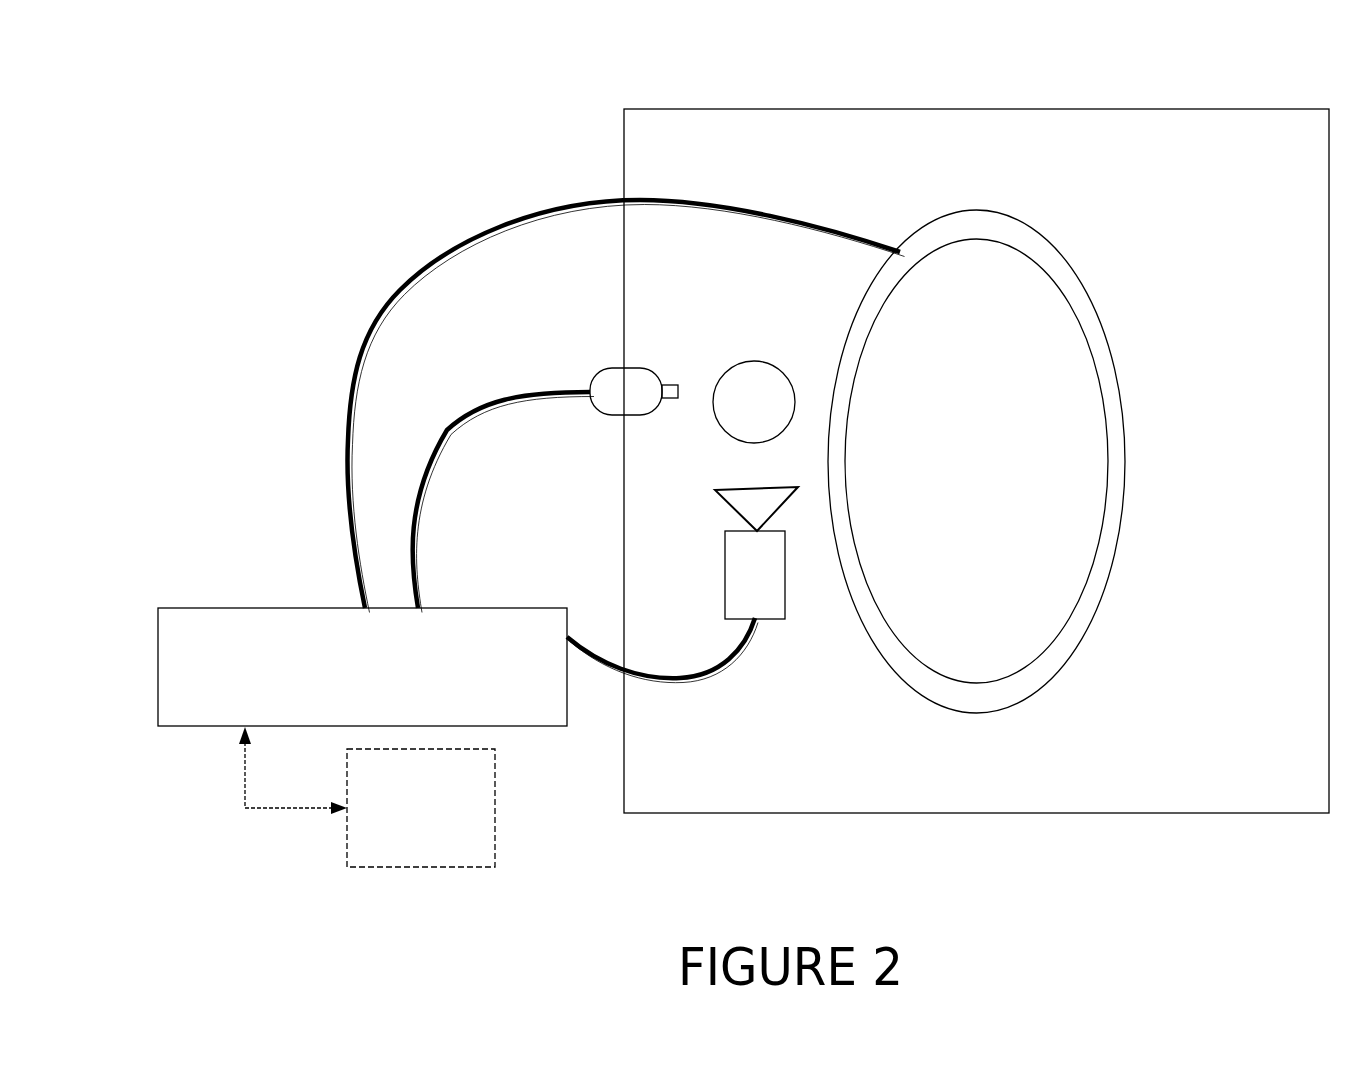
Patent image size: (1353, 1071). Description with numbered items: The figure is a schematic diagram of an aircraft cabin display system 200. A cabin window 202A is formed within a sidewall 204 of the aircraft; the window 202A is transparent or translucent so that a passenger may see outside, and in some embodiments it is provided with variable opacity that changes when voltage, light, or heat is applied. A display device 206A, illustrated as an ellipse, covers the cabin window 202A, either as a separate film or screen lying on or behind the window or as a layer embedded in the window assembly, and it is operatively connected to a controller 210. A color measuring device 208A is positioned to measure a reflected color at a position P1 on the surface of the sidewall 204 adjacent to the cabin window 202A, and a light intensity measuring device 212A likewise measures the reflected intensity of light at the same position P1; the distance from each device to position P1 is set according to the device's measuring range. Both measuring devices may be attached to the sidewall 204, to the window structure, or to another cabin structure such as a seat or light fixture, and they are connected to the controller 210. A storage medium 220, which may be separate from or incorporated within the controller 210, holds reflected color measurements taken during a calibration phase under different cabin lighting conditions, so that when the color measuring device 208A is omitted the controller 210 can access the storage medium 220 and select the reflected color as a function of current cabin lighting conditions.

The aircraft cabin display system 200 is at (242, 162).
The sidewall 204 is at (770, 174).
The display device 206A is at (1013, 217).
The cabin window 202A is at (1078, 315).
The position P1 is at (775, 416).
The controller 210 is at (255, 682).
The light intensity measuring device 212A is at (625, 415).
The color measuring device 208A is at (727, 563).
The storage medium 220 is at (447, 824).